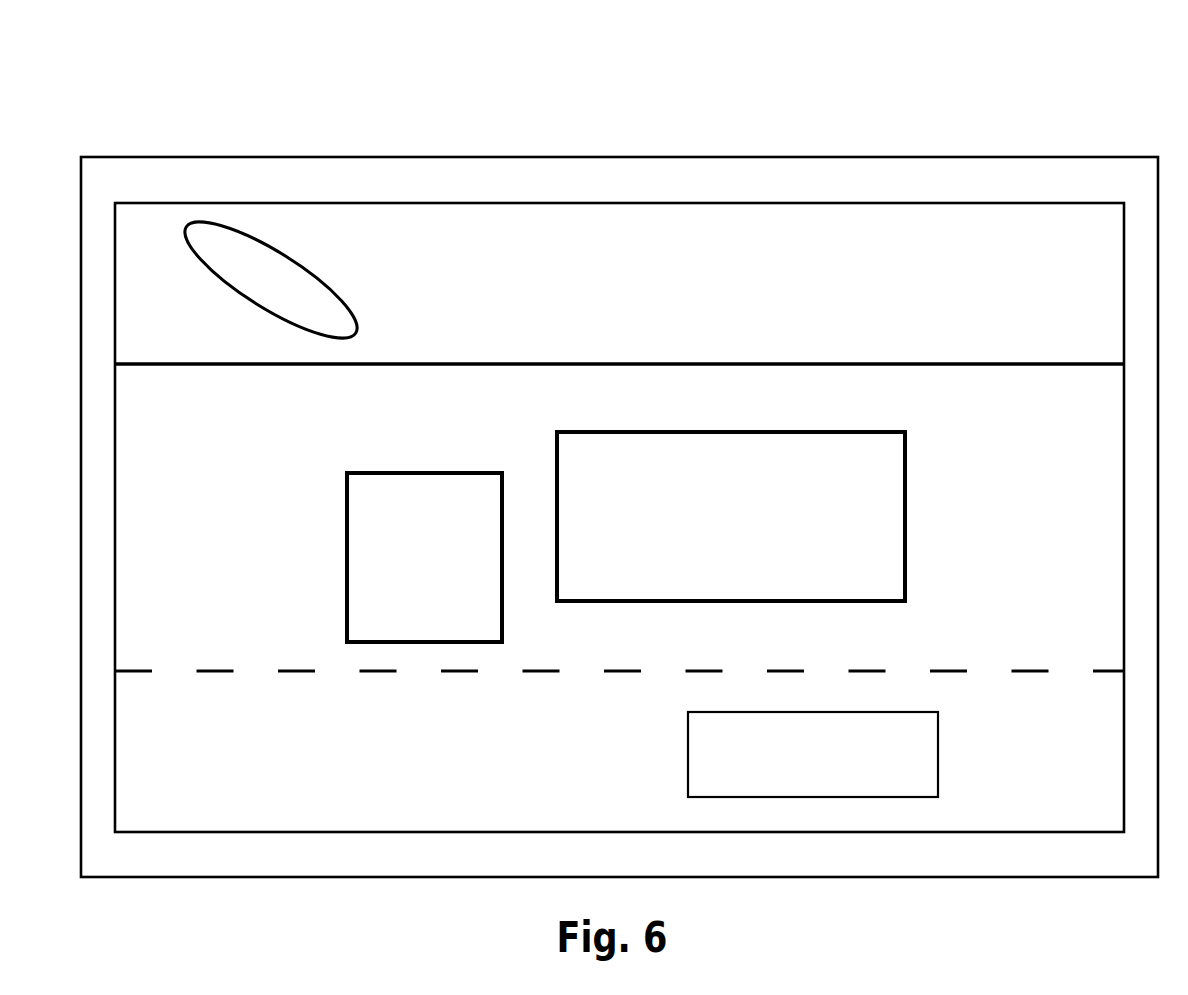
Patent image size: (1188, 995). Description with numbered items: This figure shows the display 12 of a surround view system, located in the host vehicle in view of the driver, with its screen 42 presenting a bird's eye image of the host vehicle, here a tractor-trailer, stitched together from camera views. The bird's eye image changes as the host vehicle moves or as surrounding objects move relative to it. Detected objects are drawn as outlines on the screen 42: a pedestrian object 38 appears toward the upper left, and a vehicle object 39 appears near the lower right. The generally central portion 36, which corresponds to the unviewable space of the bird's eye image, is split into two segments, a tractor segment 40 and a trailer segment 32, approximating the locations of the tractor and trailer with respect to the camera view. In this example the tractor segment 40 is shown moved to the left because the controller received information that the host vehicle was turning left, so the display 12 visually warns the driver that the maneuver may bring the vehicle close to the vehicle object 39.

The display 12 is at (882, 114).
The screen 42 is at (723, 203).
The generally central portion 36 is at (537, 414).
The pedestrian object 38 is at (342, 288).
The tractor segment 40 is at (423, 473).
The trailer segment 32 is at (723, 432).
The vehicle object 39 is at (938, 755).